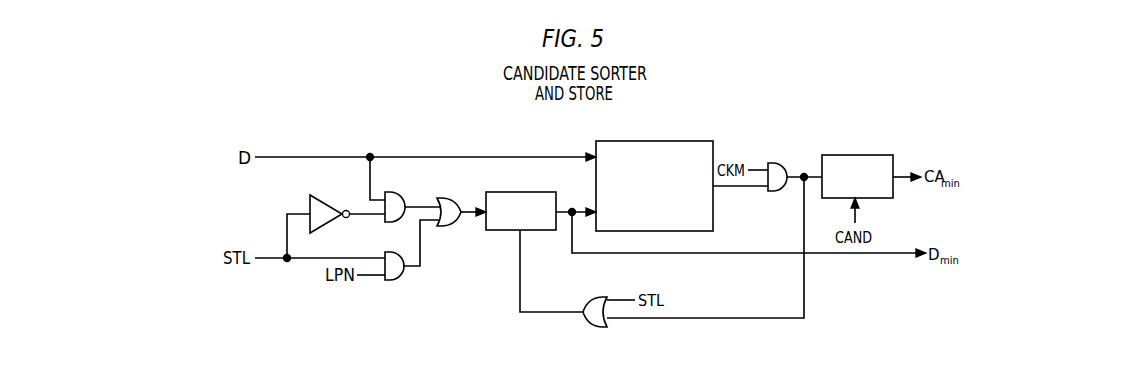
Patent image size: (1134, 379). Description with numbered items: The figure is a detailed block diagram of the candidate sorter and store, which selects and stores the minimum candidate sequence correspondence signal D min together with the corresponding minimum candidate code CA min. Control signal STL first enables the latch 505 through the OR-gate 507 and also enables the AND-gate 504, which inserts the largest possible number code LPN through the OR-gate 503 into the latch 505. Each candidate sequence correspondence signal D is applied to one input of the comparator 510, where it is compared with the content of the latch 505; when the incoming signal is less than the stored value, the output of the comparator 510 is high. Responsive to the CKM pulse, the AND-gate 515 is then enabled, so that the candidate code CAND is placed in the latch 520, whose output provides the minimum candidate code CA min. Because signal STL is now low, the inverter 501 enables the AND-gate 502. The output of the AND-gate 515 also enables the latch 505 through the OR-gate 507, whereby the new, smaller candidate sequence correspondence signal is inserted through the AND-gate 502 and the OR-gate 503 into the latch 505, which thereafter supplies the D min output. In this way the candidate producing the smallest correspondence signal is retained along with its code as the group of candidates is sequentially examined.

The inverter 501 is at (313, 181).
The AND-gate 502 is at (397, 181).
The OR-gate 503 is at (445, 198).
The AND-gate 504 is at (399, 280).
The latch 505 is at (513, 192).
The OR-gate 507 is at (602, 297).
The comparator 510 is at (660, 141).
The AND-gate 515 is at (780, 148).
The latch 520 is at (843, 155).